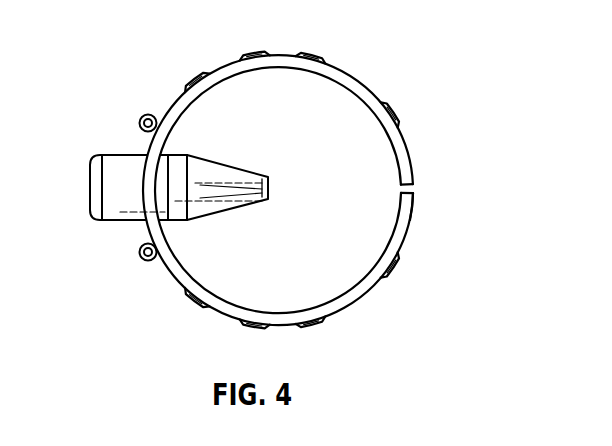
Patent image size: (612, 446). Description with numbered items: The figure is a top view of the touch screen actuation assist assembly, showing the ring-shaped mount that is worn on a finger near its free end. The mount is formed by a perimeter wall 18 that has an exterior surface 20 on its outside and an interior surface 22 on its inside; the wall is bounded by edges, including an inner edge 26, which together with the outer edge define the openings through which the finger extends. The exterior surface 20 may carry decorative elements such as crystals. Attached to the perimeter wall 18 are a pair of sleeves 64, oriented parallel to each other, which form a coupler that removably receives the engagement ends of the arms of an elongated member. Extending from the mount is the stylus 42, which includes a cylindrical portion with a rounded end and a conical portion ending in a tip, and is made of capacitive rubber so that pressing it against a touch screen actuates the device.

The perimeter wall 18 is at (408, 205).
The exterior surface 20 is at (365, 87).
The interior surface 22 is at (380, 118).
The inner edge 26 is at (412, 175).
The stylus 42 is at (120, 208).
The sleeves 64 is at (141, 116).